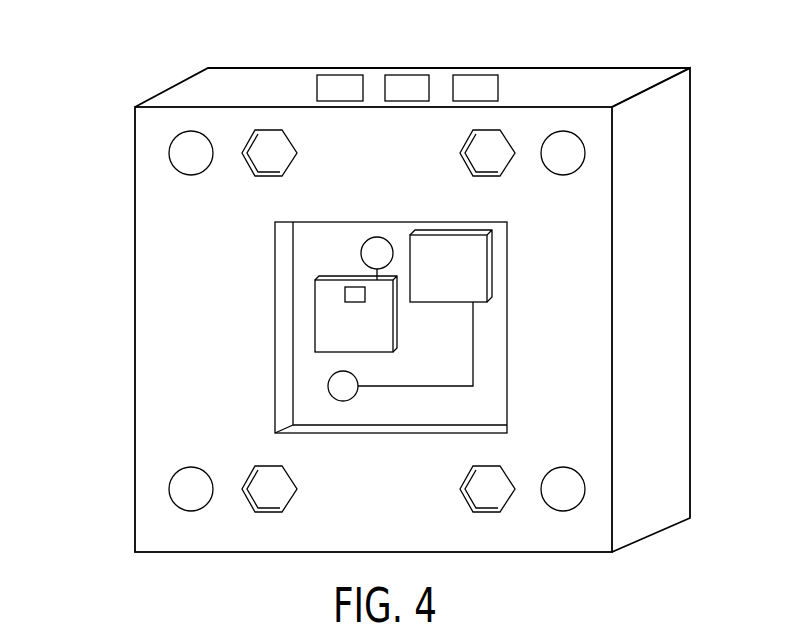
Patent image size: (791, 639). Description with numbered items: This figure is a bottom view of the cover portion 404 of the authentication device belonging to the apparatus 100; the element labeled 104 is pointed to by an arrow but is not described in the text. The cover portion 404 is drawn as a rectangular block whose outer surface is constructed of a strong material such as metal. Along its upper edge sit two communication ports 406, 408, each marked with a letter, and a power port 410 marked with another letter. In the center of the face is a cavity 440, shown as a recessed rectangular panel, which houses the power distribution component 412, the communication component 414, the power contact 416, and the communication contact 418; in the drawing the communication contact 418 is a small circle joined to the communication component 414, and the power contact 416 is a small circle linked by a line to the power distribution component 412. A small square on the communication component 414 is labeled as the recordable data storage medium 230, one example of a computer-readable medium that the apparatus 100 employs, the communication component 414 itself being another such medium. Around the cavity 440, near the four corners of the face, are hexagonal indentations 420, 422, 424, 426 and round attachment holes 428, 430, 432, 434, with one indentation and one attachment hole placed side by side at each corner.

The apparatus 100 is at (604, 53).
The housing 104 is at (100, 229).
The cover portion 404 is at (692, 240).
The communication port 406 is at (317, 88).
The communication port 408 is at (403, 75).
The power port 410 is at (498, 88).
The power distribution component 412 is at (468, 292).
The communication component 414 is at (370, 340).
The power contact 416 is at (343, 401).
The communication contact 418 is at (361, 254).
The recordable data storage medium 230 is at (365, 294).
The cavity 440 is at (308, 400).
The indentation 420 is at (460, 147).
The indentation 422 is at (297, 143).
The indentation 424 is at (488, 515).
The indentation 426 is at (267, 515).
The attachment hole 428 is at (563, 175).
The attachment hole 430 is at (191, 175).
The attachment hole 432 is at (563, 511).
The attachment hole 434 is at (188, 511).